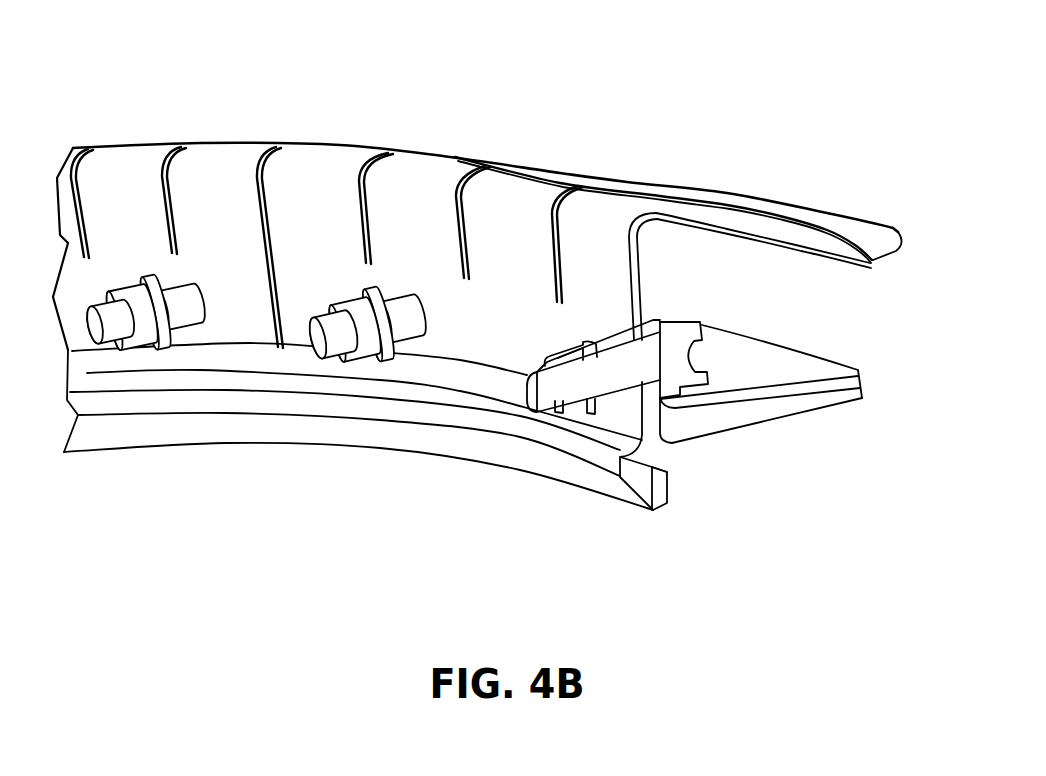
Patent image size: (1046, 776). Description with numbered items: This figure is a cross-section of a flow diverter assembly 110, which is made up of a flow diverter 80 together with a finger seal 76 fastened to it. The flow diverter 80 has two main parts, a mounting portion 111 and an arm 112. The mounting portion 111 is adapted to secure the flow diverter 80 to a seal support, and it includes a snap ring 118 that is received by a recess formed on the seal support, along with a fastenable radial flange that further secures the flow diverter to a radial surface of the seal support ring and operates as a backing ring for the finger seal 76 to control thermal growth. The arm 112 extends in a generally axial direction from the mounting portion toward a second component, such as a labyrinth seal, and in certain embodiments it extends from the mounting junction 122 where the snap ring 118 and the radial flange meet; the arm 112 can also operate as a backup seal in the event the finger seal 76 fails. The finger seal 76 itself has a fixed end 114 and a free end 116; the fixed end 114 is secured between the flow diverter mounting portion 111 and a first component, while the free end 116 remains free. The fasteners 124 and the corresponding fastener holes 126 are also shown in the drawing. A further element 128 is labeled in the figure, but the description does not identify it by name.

The flow diverter assembly 110 is at (664, 92).
The finger seal 76 is at (835, 179).
The finger seal free end 116 is at (787, 232).
The finger seal fixed end 114 is at (482, 324).
The fasteners 124 is at (335, 346).
The flow diverter mounting portion 111 is at (545, 488).
The fastener holes 126 is at (650, 402).
The flow diverter snap ring 118 is at (636, 462).
The flow diverter mounting junction 122 is at (663, 445).
The plate 128 is at (700, 403).
The flow diverter arm 112 is at (781, 422).
The flow diverter 80 is at (862, 422).